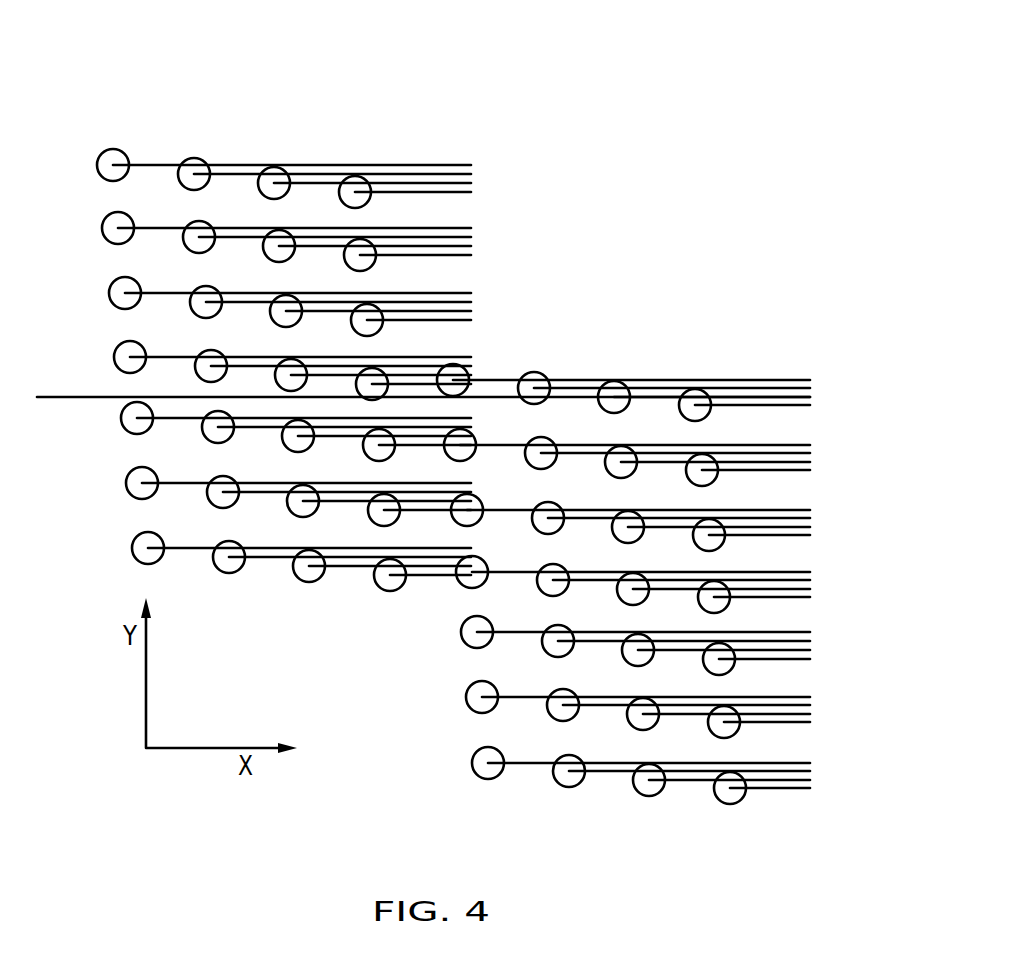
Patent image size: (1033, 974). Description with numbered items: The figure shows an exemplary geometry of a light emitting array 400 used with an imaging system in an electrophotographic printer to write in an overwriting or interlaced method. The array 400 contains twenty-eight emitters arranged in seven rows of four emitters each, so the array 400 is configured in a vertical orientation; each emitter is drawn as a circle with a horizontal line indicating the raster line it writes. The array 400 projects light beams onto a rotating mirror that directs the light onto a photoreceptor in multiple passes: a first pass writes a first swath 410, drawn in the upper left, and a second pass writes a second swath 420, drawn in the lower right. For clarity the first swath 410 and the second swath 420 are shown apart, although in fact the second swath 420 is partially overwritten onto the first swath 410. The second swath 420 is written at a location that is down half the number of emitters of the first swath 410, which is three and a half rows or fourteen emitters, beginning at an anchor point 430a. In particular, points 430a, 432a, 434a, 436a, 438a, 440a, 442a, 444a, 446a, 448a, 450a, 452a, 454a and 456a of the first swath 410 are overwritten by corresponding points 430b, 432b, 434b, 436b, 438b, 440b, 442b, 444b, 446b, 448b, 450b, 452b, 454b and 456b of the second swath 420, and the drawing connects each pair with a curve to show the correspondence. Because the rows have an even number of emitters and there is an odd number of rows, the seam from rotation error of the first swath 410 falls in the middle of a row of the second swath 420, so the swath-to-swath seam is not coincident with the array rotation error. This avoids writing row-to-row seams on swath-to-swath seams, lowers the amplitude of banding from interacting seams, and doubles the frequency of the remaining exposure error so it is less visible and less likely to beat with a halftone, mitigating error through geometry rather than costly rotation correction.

The array 400 is at (80, 58).
The first swath 410 is at (189, 115).
The second swath 420 is at (512, 803).
The anchor point 430a is at (300, 360).
The point of the first swath 432a is at (385, 370).
The point of the first swath 434a is at (302, 425).
The point of the first swath 436a is at (378, 432).
The point of the first swath 438a is at (288, 486).
The point of the first swath 440a is at (368, 494).
The point of the first swath 442a is at (310, 583).
The point of the first swath 444a is at (390, 590).
The point of the first swath 446a is at (121, 418).
The point of the first swath 448a is at (250, 419).
The point of the first swath 450a is at (126, 487).
The point of the first swath 452a is at (213, 477).
The point of the first swath 454a is at (132, 558).
The point of the first swath 456a is at (230, 573).
The point of the second swath 430b is at (628, 384).
The point of the second swath 432b is at (703, 393).
The point of the second swath 434b is at (637, 458).
The point of the second swath 436b is at (705, 472).
The point of the second swath 438b is at (455, 518).
The point of the second swath 440b is at (708, 528).
The point of the second swath 442b is at (720, 604).
The point of the second swath 444b is at (640, 598).
The point of the second swath 446b is at (475, 438).
The point of the second swath 448b is at (549, 440).
The point of the second swath 450b is at (622, 537).
The point of the second swath 452b is at (558, 503).
The point of the second swath 454b is at (472, 589).
The point of the second swath 456b is at (552, 597).